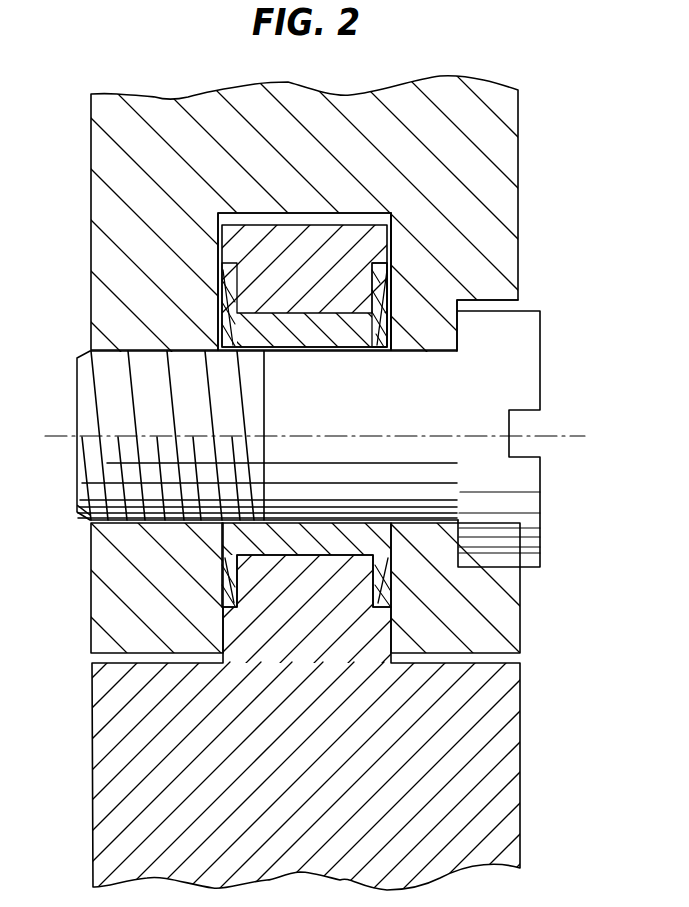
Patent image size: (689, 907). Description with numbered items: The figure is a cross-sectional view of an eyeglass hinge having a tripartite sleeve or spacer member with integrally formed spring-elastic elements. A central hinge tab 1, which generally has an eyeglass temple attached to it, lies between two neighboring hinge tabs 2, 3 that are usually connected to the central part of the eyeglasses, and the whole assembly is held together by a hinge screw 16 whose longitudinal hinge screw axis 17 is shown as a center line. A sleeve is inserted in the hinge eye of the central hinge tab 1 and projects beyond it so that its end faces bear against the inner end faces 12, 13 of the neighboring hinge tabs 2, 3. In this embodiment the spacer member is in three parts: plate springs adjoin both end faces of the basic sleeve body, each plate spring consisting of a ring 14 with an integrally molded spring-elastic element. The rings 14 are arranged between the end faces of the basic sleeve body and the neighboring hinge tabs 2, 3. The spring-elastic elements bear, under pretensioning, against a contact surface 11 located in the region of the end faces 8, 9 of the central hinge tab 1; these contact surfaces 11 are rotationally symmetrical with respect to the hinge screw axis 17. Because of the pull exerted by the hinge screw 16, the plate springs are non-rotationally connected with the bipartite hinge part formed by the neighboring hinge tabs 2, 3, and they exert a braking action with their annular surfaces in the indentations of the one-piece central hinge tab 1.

The central hinge tab 1 is at (233, 236).
The neighboring hinge tab 2 is at (102, 641).
The neighboring hinge tab 3 is at (513, 625).
The end face of the central hinge tab 8 is at (220, 240).
The end face of the central hinge tab 9 is at (391, 240).
The contact surface 11 is at (387, 278).
The inner end face of the neighboring hinge tab 12 is at (218, 215).
The inner end face of the neighboring hinge tab 13 is at (391, 216).
The ring 14 is at (220, 338).
The hinge screw 16 is at (528, 517).
The hinge screw axis 17 is at (567, 436).